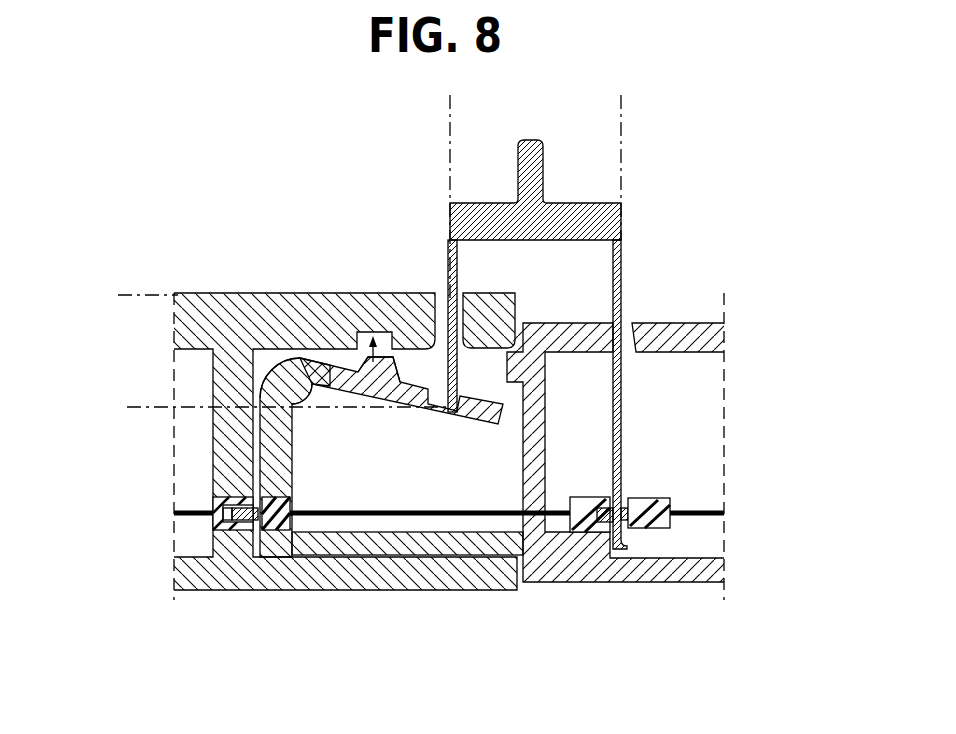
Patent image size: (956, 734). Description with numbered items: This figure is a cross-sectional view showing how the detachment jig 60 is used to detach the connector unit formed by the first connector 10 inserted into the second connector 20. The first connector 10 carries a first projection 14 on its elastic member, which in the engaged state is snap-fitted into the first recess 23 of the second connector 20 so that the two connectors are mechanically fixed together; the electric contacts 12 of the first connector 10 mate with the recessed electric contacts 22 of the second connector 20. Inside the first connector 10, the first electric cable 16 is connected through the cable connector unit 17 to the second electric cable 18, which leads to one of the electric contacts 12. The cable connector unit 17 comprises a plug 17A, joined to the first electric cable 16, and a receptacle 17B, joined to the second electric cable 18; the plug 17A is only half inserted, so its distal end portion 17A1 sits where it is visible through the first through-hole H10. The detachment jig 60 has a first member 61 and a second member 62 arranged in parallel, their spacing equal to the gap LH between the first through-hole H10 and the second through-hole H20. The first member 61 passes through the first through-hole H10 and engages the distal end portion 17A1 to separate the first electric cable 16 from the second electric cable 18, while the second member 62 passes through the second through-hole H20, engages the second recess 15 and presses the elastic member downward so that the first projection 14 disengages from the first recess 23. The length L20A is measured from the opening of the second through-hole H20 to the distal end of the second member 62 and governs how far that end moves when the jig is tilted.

The first connector 10 is at (714, 228).
The electric contacts 12 is at (273, 533).
The first projection 14 is at (386, 356).
The second recess 15 is at (436, 383).
The first electric cable 16 is at (693, 518).
The cable connector unit 17 is at (589, 599).
The plug 17A is at (644, 576).
The distal end portion of the plug 17A1 is at (603, 524).
The receptacle 17B is at (592, 534).
The second electric cable 18 is at (411, 548).
The second connector 20 is at (187, 244).
The electric contacts 22 is at (233, 532).
The first recess 23 is at (302, 358).
The detachment jig 60 is at (622, 233).
The first member 61 is at (612, 290).
The second member 62 is at (459, 290).
The first through-hole H10 is at (628, 314).
The second through-hole H20 is at (441, 290).
The gap between the first through-hole and the second through-hole LH is at (621, 117).
The length from the opening of the second through-hole to the distal end of the seco L20A is at (143, 295).